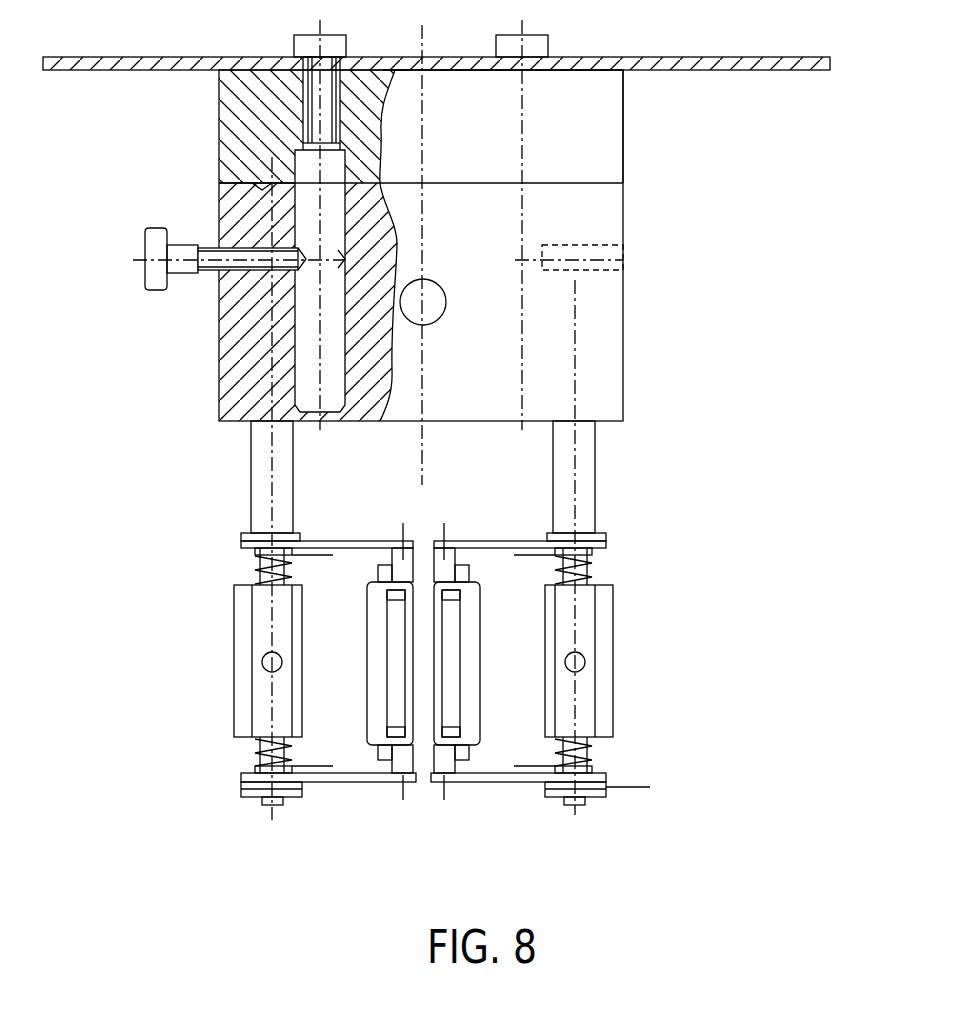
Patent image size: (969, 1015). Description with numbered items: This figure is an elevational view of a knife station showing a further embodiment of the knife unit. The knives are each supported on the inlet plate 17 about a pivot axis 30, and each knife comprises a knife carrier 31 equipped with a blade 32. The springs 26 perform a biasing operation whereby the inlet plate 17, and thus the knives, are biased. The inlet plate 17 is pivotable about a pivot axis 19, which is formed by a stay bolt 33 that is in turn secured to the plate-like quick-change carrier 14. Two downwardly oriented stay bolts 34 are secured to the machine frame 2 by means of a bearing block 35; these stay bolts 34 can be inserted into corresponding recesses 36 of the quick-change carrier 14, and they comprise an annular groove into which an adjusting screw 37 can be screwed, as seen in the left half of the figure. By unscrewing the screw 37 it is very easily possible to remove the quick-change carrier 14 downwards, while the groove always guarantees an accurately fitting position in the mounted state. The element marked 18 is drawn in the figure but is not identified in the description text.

The machine frame 2 is at (680, 58).
The quick-change carrier 14 is at (563, 307).
The inlet plate 17 is at (520, 615).
The slide element 18 is at (393, 717).
The pivot axis 19 is at (575, 808).
The springs 26 is at (256, 569).
The pivot axis 30 is at (445, 793).
The knife carrier 31 is at (378, 627).
The blade 32 is at (453, 706).
The stay bolt 33 is at (583, 458).
The stay bolts 34 is at (265, 186).
The bearing block 35 is at (608, 118).
The recesses 36 is at (327, 422).
The adjusting screw 37 is at (148, 246).